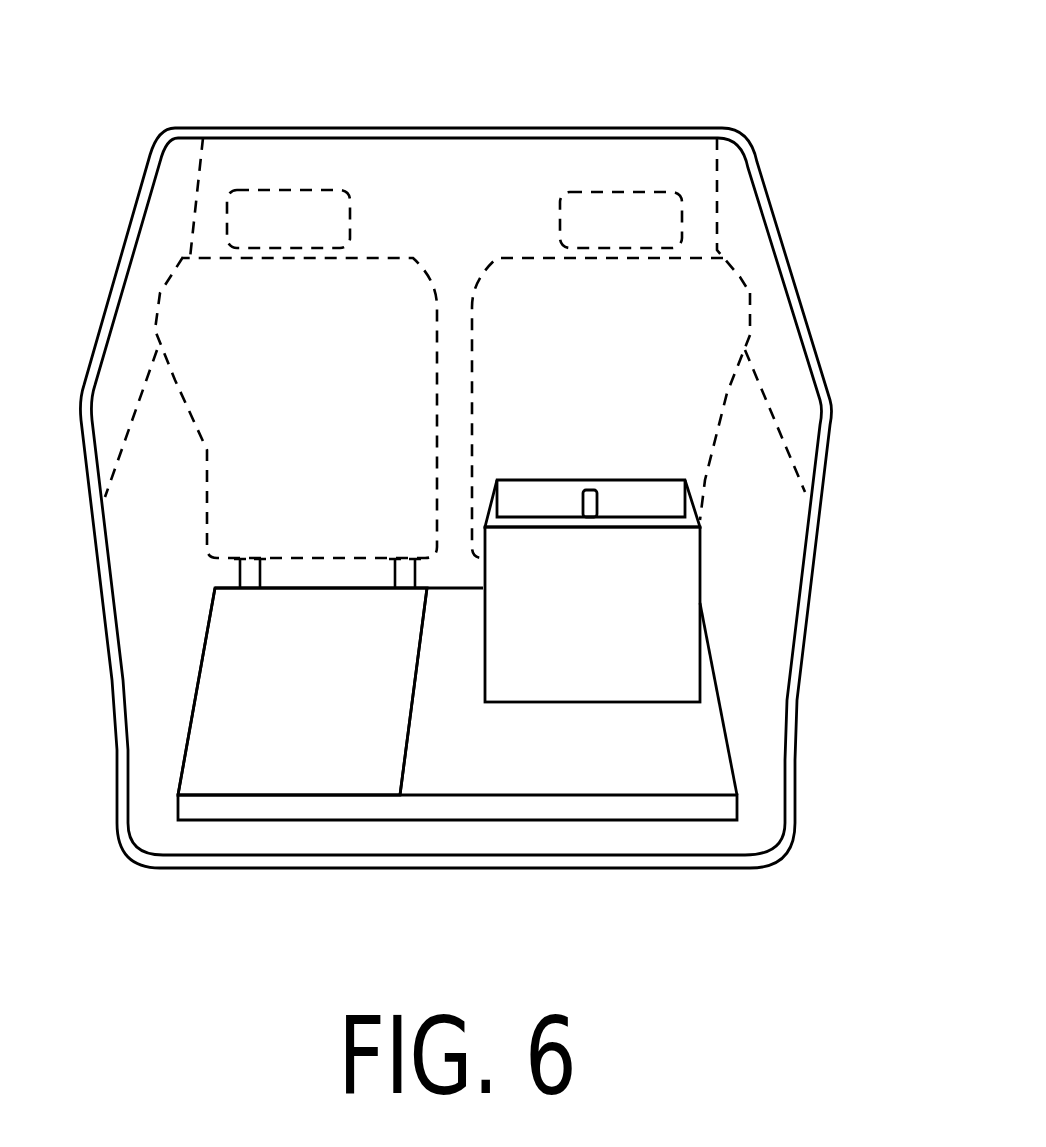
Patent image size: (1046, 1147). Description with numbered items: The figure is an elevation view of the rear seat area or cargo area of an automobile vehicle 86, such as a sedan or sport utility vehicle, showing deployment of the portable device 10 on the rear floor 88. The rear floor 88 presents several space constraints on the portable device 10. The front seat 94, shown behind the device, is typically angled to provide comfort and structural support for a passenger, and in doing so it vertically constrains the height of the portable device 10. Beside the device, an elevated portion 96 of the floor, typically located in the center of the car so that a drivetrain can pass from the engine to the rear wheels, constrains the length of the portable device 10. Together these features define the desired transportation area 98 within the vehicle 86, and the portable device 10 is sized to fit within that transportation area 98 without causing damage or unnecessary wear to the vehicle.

The automobile vehicle 86 is at (645, 127).
The front seat 94 is at (770, 287).
The transportation area 98 is at (160, 435).
The portable device 10 is at (571, 637).
The rear floor 88 is at (572, 772).
The elevated portion 96 is at (433, 768).